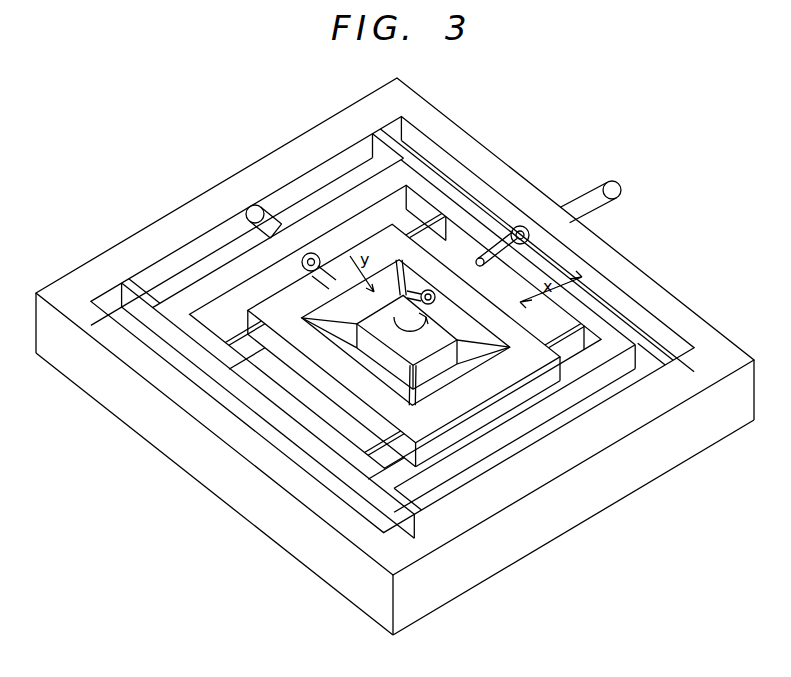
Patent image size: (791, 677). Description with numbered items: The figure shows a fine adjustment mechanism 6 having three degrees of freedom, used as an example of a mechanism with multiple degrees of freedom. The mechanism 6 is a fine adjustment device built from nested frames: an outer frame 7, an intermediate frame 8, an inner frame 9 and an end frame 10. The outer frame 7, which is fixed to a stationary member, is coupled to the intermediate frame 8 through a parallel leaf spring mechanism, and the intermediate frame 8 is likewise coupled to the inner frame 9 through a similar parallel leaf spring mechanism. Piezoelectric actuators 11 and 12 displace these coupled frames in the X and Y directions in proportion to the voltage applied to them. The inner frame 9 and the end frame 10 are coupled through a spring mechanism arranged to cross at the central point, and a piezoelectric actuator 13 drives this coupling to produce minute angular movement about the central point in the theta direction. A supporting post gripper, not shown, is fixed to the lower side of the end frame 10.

The mechanism 6 is at (622, 545).
The outer frame 7 is at (368, 590).
The intermediate frame 8 is at (437, 198).
The inner frame 9 is at (332, 372).
The end frame 10 is at (445, 316).
The piezoelectric actuator 11 is at (602, 186).
The piezoelectric actuator 12 is at (266, 206).
The piezoelectric actuator 13 is at (487, 262).